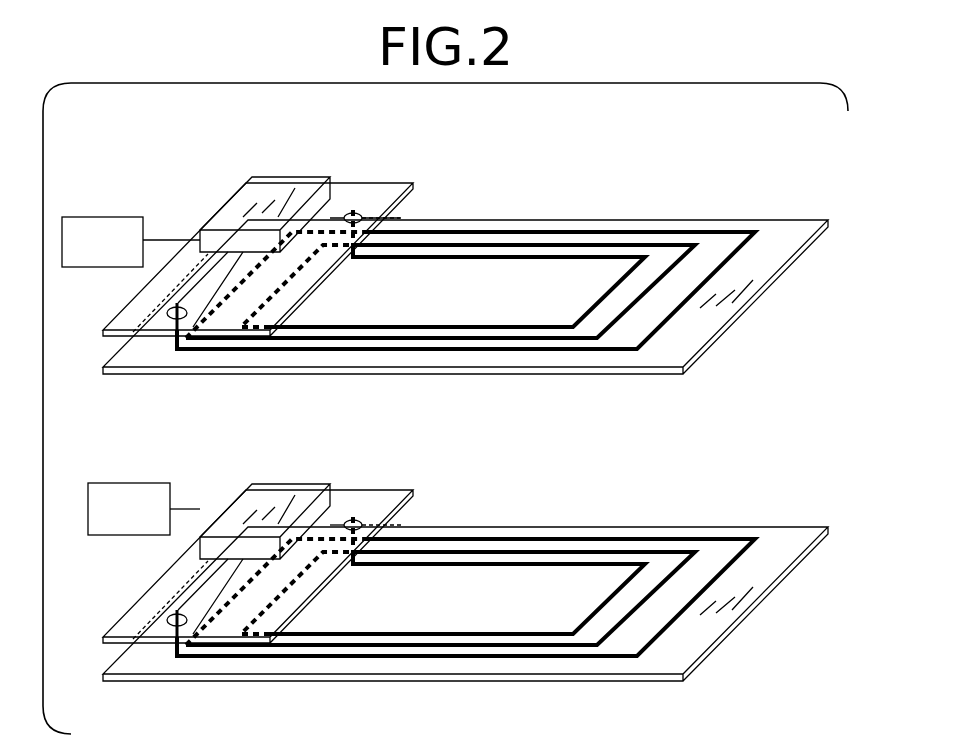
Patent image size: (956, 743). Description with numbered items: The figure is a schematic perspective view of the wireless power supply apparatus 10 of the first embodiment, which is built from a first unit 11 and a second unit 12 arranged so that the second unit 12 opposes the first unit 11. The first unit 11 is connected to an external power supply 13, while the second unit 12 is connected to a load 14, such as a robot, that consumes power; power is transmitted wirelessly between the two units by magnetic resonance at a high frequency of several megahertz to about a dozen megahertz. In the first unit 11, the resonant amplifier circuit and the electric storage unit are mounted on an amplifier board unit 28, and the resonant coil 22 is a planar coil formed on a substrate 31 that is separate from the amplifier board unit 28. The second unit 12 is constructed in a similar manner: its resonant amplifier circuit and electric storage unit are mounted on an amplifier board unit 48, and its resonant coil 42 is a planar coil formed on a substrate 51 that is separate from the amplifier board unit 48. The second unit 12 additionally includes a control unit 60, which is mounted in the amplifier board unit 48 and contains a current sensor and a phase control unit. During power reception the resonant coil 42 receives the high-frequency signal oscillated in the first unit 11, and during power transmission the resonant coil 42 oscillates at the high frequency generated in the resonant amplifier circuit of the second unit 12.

The wireless power supply apparatus 10 is at (748, 161).
The first unit 11 is at (458, 589).
The second unit 12 is at (452, 191).
The power supply 13 is at (144, 485).
The load 14 is at (106, 216).
The resonant coil 22 is at (466, 565).
The amplifier board unit 28 is at (366, 494).
The substrate 31 is at (465, 577).
The resonant coil 42 is at (549, 230).
The amplifier board unit 48 is at (345, 196).
The substrate 51 is at (642, 220).
The control unit 60 is at (250, 195).